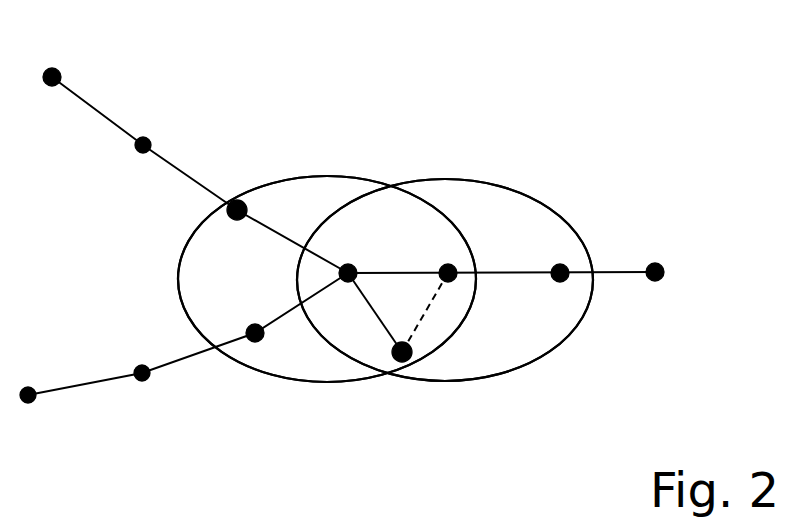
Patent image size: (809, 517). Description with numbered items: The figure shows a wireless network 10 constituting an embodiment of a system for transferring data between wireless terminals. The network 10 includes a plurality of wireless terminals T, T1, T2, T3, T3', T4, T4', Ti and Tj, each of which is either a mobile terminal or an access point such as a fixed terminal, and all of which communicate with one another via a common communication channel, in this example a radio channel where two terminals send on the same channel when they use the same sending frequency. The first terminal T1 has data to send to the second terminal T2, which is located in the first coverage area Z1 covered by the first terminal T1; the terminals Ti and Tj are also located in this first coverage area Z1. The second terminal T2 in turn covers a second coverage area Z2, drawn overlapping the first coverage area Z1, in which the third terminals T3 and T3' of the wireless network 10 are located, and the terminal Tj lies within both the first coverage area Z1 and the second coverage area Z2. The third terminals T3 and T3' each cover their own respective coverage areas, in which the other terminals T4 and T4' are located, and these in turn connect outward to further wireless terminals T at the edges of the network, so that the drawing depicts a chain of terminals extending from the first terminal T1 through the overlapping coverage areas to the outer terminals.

The wireless network 10 is at (483, 94).
The first coverage area Z1 is at (520, 186).
The second coverage area Z2 is at (333, 174).
The wireless terminal T is at (354, 241).
The first terminal T1 is at (435, 255).
The second terminal T2 is at (357, 255).
The third terminal T3 is at (245, 313).
The other terminal T4 is at (131, 354).
The third terminal T3' is at (240, 187).
The other terminal T4' is at (156, 124).
The terminal Ti is at (548, 253).
The terminal Tj is at (402, 382).